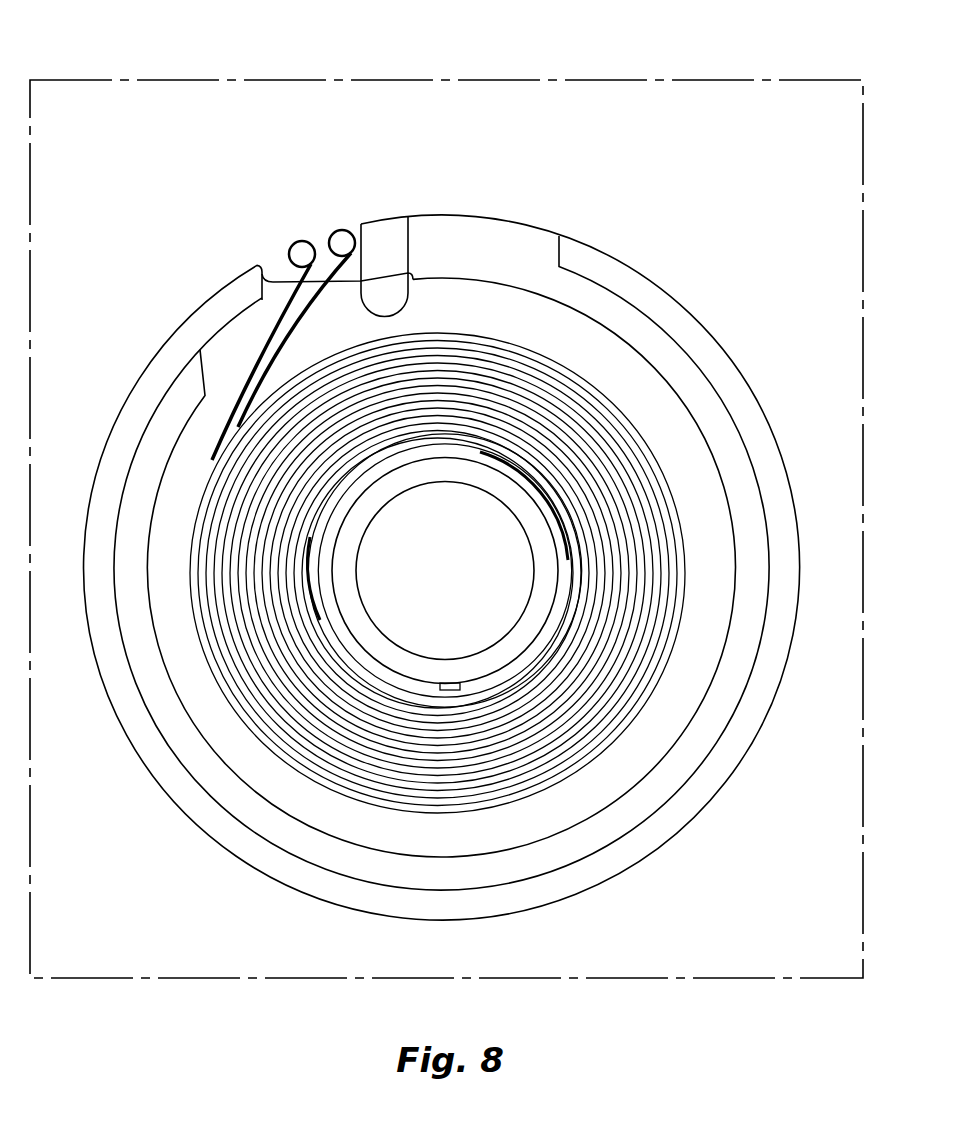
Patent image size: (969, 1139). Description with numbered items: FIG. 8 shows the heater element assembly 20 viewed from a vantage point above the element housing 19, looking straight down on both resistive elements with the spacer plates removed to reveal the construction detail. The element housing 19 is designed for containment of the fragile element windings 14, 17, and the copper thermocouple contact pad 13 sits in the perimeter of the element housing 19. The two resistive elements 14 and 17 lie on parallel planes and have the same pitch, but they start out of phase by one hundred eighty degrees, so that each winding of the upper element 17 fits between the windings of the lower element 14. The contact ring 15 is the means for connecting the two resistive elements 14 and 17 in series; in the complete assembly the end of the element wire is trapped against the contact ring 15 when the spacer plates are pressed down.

The heater element assembly 20 is at (446, 493).
The thermocouple contact pad 13 is at (487, 218).
The resistive element 14 is at (268, 343).
The contact ring 15 is at (550, 613).
The resistive element 17 is at (317, 310).
The element housing 19 is at (700, 323).